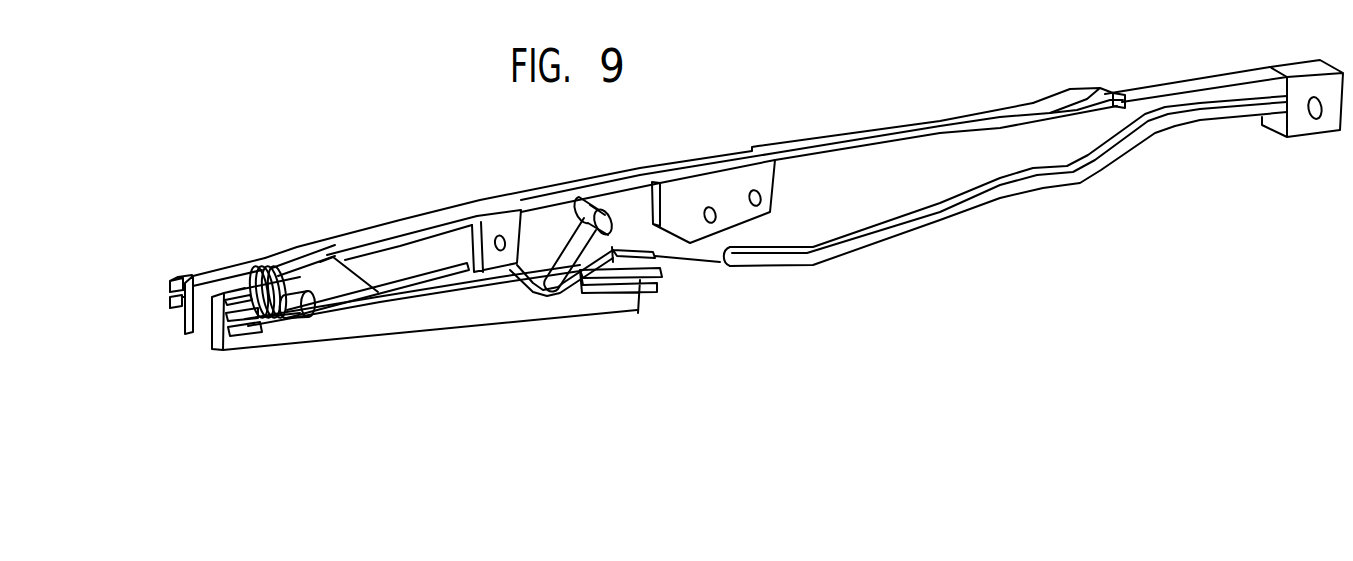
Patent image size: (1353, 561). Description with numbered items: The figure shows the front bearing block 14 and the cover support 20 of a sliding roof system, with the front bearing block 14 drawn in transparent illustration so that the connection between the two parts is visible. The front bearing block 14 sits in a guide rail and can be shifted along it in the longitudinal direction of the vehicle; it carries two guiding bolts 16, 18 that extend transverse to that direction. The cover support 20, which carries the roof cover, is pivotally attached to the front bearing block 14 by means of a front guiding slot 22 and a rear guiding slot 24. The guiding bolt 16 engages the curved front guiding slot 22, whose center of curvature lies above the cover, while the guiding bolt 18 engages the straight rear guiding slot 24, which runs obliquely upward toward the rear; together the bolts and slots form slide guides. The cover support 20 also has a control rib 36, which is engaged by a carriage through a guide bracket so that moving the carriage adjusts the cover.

The front bearing block 14 is at (477, 303).
The guiding bolt 16 is at (315, 310).
The guiding bolt 18 is at (610, 218).
The cover support 20 is at (923, 153).
The front guiding slot 22 is at (320, 278).
The rear guiding slot 24 is at (560, 277).
The control rib 36 is at (930, 220).